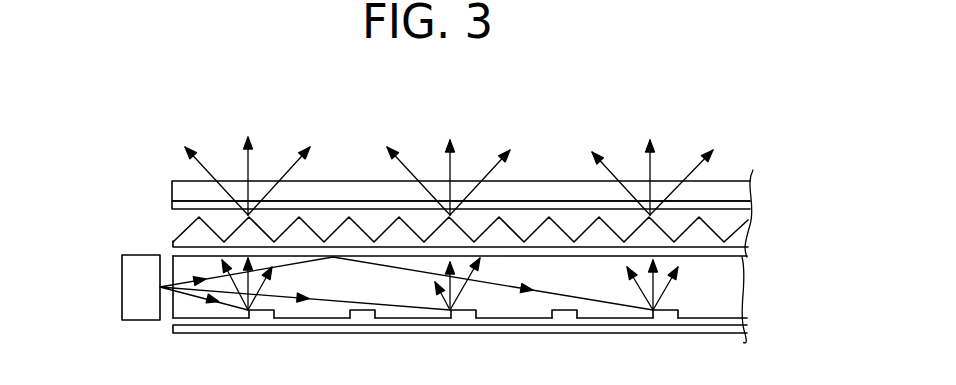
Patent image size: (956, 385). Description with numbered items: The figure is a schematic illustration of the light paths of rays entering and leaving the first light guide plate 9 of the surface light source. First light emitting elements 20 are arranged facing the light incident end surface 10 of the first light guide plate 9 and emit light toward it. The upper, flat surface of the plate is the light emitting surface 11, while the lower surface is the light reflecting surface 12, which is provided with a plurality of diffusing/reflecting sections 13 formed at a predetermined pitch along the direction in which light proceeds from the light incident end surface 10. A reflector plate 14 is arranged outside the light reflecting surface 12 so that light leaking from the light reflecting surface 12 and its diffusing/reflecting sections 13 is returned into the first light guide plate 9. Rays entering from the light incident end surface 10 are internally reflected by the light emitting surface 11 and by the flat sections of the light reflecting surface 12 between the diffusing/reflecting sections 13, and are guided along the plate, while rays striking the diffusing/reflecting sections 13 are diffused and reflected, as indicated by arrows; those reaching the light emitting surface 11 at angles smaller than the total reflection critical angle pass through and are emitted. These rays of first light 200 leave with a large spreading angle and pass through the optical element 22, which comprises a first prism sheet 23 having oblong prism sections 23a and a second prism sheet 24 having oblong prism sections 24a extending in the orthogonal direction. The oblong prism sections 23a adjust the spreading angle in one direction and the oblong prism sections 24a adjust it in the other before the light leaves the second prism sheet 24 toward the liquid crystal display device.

The first light guide plate 9 is at (458, 320).
The light incident end surface 10 is at (171, 313).
The light emitting surface 11 is at (712, 258).
The light reflecting surface 12 is at (500, 320).
The diffusing/reflecting sections 13 is at (360, 312).
The reflector plate 14 is at (262, 328).
The first light emitting elements 20 is at (122, 285).
The optical element 22 is at (466, 174).
The first prism sheet 23 is at (430, 169).
The oblong prism sections 23a is at (510, 233).
The second prism sheet 24 is at (431, 167).
The oblong prism sections 24a is at (345, 197).
The rays of first light 200 is at (207, 170).